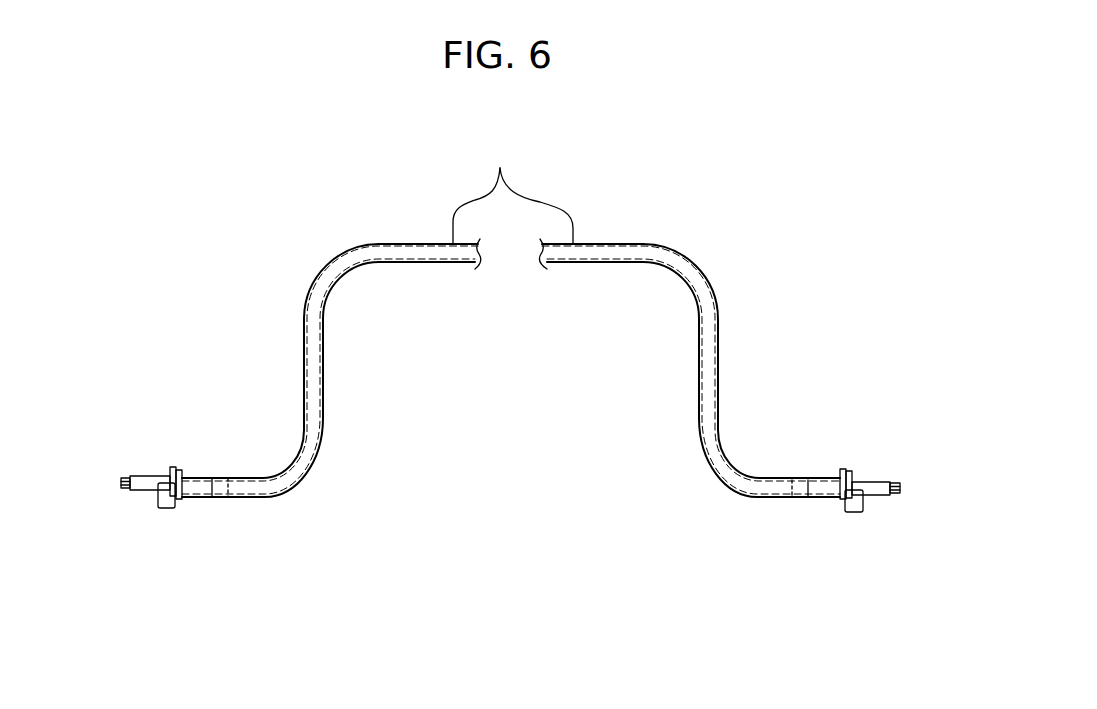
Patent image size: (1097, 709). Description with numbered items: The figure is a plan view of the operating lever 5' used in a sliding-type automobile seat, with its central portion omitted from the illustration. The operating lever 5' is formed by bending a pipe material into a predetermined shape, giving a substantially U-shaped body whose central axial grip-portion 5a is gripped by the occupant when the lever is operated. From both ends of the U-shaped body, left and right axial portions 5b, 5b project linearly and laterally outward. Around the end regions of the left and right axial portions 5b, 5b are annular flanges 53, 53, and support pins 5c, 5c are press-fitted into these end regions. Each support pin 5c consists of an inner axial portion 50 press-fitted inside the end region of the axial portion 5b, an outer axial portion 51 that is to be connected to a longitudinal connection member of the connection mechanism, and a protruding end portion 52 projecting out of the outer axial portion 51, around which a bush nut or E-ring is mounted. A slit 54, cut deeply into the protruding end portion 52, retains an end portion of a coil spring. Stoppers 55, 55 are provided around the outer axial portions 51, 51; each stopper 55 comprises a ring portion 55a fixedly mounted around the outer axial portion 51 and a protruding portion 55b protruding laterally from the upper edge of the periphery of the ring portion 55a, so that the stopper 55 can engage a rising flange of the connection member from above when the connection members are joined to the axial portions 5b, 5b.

The operating lever 5' is at (511, 316).
The central axial grip-portion 5a is at (513, 190).
The left and right axial portions 5b is at (277, 497).
The support pins 5c is at (159, 474).
The inner axial portions 50 is at (214, 478).
The outer axial portions 51 is at (140, 497).
The protruding end portions 52 is at (126, 477).
The annular flanges 53 is at (194, 498).
The slits 54 is at (121, 482).
The stoppers 55 is at (170, 517).
The ring portions 55a is at (178, 469).
The protruding portions 55b is at (158, 506).